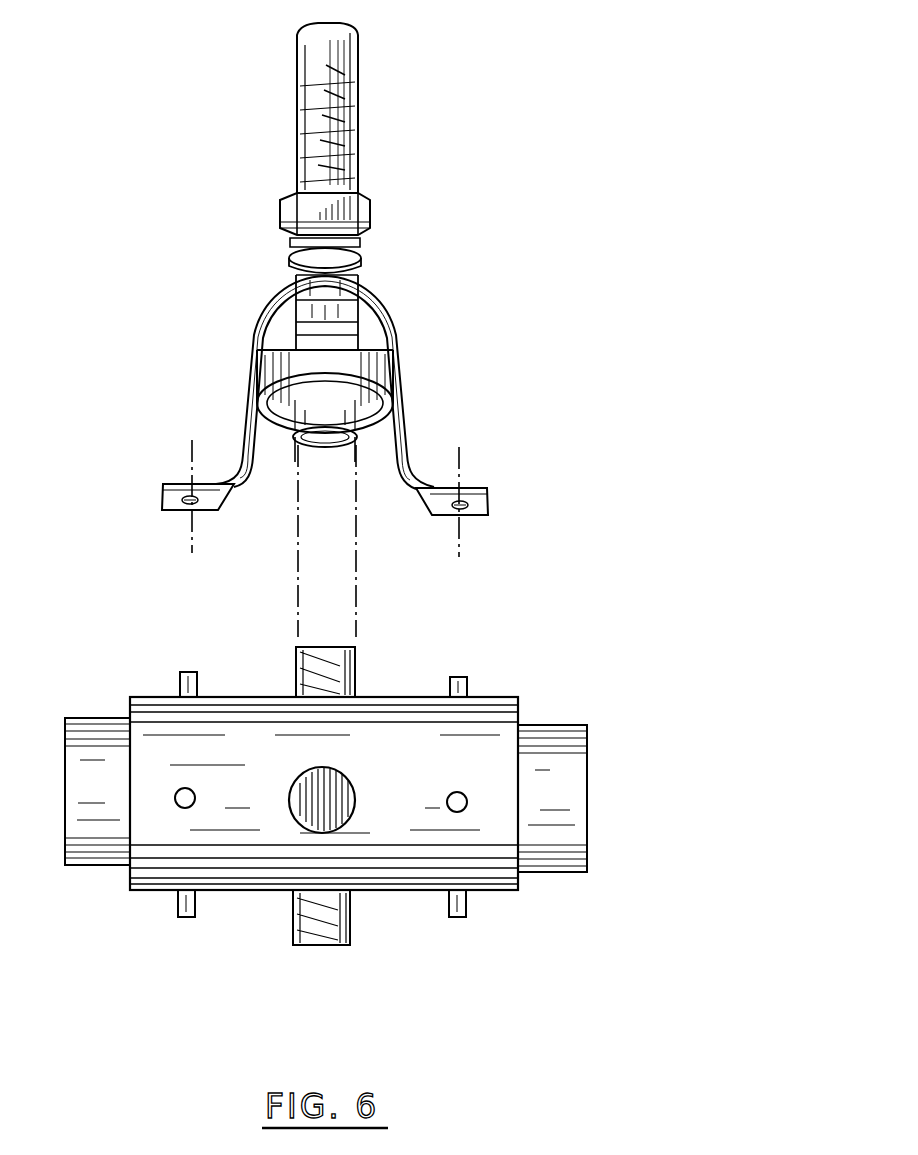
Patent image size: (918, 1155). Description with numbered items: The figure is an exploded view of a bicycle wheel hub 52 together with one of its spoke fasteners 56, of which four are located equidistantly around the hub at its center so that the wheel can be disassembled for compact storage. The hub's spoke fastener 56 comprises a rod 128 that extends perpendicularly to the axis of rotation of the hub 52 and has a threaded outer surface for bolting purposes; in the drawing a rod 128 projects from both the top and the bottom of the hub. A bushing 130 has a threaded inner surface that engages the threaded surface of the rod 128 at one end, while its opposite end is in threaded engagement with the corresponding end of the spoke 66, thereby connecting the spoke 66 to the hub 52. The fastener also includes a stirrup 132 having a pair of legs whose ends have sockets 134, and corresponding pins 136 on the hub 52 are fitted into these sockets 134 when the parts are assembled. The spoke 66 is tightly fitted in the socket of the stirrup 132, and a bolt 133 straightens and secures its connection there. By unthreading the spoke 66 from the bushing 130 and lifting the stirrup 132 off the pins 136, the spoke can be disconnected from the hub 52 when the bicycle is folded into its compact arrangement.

The hub 52 is at (560, 797).
The hub's spoke fastener 56 is at (243, 289).
The spoke 66 is at (358, 117).
The rod 128 is at (355, 650).
The bushing 130 is at (320, 408).
The stirrup 132 is at (388, 318).
The bolt 133 is at (370, 213).
The sockets 134 is at (190, 503).
The pins 136 is at (183, 791).